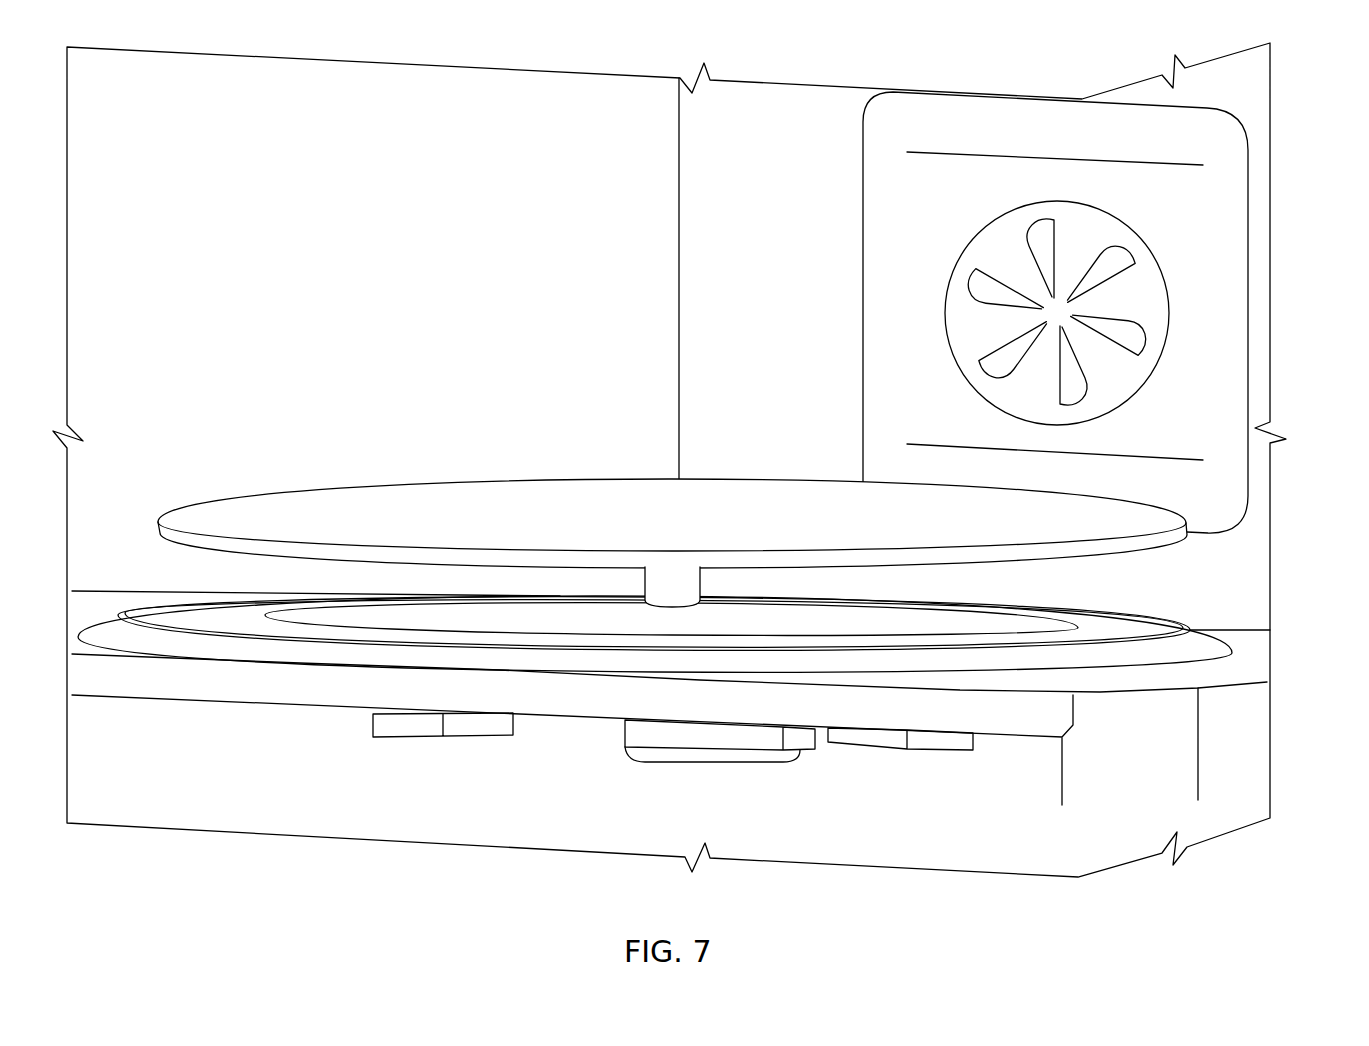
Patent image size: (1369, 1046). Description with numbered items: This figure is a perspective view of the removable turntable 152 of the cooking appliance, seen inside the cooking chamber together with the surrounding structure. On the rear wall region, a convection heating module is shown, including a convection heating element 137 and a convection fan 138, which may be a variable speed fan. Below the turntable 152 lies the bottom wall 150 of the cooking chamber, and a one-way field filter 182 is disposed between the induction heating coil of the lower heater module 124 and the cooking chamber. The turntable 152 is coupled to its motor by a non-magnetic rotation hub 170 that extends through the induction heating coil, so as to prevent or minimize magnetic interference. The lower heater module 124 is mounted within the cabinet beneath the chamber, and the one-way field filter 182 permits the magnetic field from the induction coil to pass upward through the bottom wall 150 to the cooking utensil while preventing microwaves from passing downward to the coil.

The lower heater module 124 is at (473, 723).
The convection heating element 137 is at (998, 217).
The convection fan 138 is at (978, 278).
The bottom wall 150 is at (1225, 680).
The turntable 152 is at (471, 503).
The non-magnetic rotation hub 170 is at (682, 586).
The one-way field filter 182 is at (1008, 628).